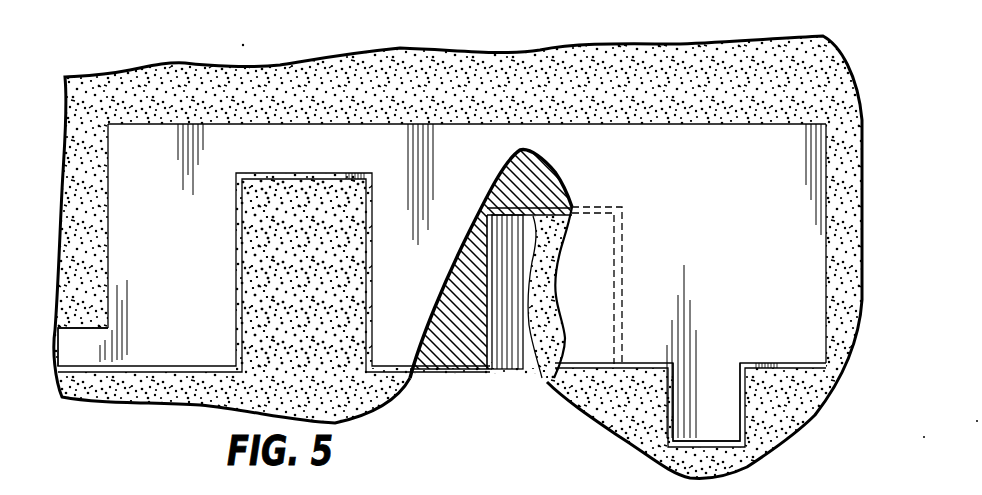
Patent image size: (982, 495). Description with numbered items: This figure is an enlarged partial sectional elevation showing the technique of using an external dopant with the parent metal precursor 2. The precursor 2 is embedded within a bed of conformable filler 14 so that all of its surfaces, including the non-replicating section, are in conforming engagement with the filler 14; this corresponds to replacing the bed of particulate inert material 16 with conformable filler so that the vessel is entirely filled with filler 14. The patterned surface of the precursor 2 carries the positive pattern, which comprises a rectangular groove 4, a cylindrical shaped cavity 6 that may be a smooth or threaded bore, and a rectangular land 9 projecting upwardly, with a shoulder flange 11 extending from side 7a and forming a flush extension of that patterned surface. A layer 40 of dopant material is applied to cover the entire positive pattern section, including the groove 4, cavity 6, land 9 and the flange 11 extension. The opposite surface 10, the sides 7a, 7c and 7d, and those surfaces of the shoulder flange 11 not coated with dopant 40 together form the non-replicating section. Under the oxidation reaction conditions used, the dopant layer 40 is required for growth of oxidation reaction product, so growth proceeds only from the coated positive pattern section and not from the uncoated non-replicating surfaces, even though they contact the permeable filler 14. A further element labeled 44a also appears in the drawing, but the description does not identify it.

The parent metal precursor 2 is at (436, 122).
The rectangular groove 4 is at (360, 210).
The cylindrical shaped cavity 6 is at (538, 228).
The side 7a is at (100, 250).
The side 7c is at (828, 243).
The side 7d is at (598, 142).
The rectangular land 9 is at (705, 415).
The surface 10 is at (660, 125).
The shoulder flange 11 is at (82, 352).
The conformable filler 14 is at (684, 68).
The particulate inert material 16 is at (489, 355).
The layer of dopant material 40 is at (236, 214).
The dielectric region 44a is at (501, 351).